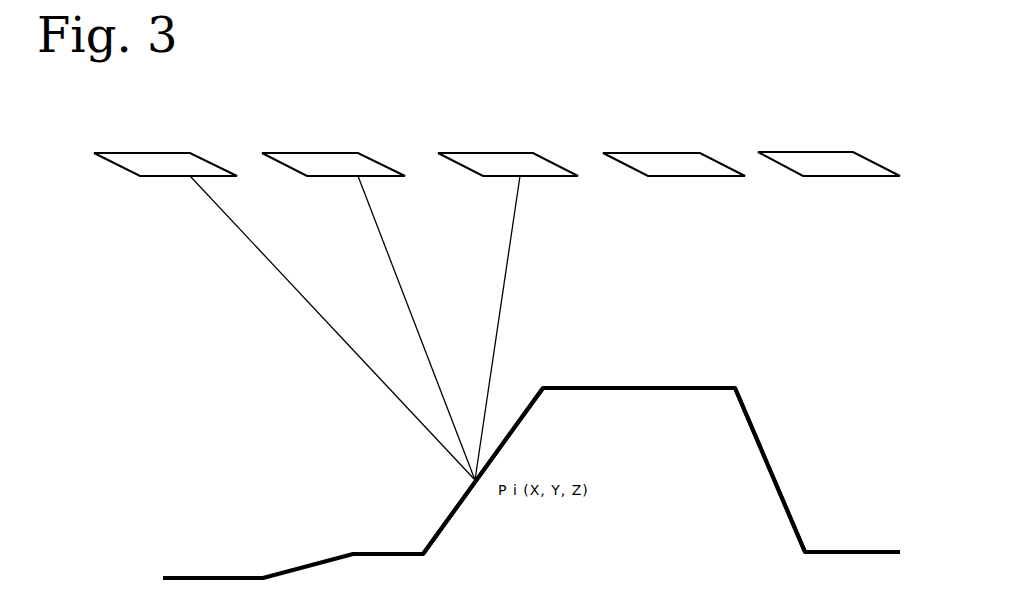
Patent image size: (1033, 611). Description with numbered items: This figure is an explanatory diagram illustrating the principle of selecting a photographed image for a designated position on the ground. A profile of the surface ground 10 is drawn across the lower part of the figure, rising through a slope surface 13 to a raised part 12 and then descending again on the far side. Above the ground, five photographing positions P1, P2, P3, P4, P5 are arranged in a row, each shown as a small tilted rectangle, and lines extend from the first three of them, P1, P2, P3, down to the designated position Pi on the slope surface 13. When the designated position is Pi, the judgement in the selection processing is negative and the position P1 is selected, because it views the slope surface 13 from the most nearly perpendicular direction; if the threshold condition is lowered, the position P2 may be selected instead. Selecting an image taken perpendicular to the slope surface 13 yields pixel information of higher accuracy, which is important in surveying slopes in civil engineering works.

The measurement object 10 is at (350, 553).
The raised part 12 is at (733, 412).
The slope surface 13 is at (452, 508).
The position P1 is at (165, 149).
The position P2 is at (333, 149).
The projection pattern position 3 P3 is at (508, 149).
The projection pattern position 4 P4 is at (674, 149).
The projection pattern position 5 P5 is at (829, 149).